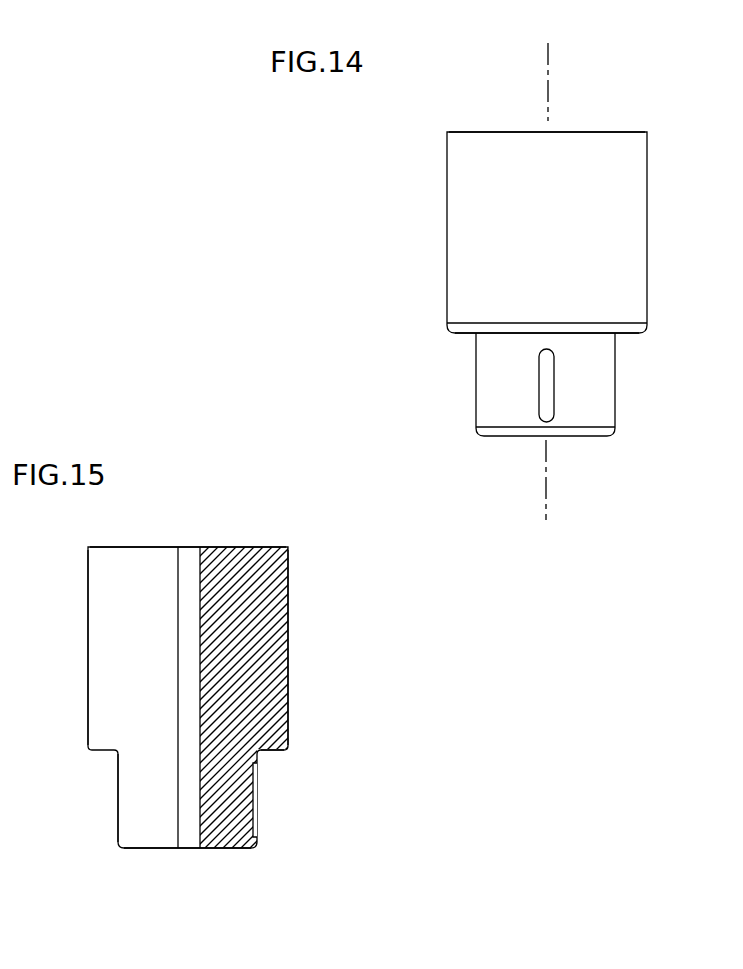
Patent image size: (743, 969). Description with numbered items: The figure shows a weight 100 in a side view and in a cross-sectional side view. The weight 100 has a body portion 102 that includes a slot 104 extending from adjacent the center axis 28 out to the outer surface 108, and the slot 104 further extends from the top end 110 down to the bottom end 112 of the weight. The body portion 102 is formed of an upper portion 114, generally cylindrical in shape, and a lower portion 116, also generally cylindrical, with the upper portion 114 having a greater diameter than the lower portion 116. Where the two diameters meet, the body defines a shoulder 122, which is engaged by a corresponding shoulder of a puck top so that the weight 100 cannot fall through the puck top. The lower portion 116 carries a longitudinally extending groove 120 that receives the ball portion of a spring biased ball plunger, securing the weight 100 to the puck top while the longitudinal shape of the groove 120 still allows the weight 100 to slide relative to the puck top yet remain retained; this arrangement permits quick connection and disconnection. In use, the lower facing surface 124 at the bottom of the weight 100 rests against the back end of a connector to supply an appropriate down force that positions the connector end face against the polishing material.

In FIG. 14, the center axis 28 is at (547, 462).
In FIG. 14, the weight 100 is at (647, 101).
In FIG. 15, the weight 100 is at (235, 467).
In FIG. 14, the body portion 102 is at (647, 229).
In FIG. 15, the body portion 102 is at (288, 593).
In FIG. 15, the slot 104 is at (112, 664).
In FIG. 14, the outer surface 108 is at (543, 201).
In FIG. 15, the outer surface 108 is at (88, 588).
In FIG. 14, the top end 110 is at (492, 131).
In FIG. 15, the top end 110 is at (251, 546).
In FIG. 14, the bottom end 112 is at (585, 437).
In FIG. 15, the bottom end 112 is at (228, 851).
In FIG. 15, the upper portion 114 is at (288, 642).
In FIG. 15, the lower portion 116 is at (117, 790).
In FIG. 14, the groove 120 is at (555, 392).
In FIG. 15, the groove 120 is at (253, 812).
In FIG. 14, the shoulder 122 is at (624, 334).
In FIG. 15, the shoulder 122 is at (270, 751).
In FIG. 15, the lower facing surface 124 is at (146, 851).